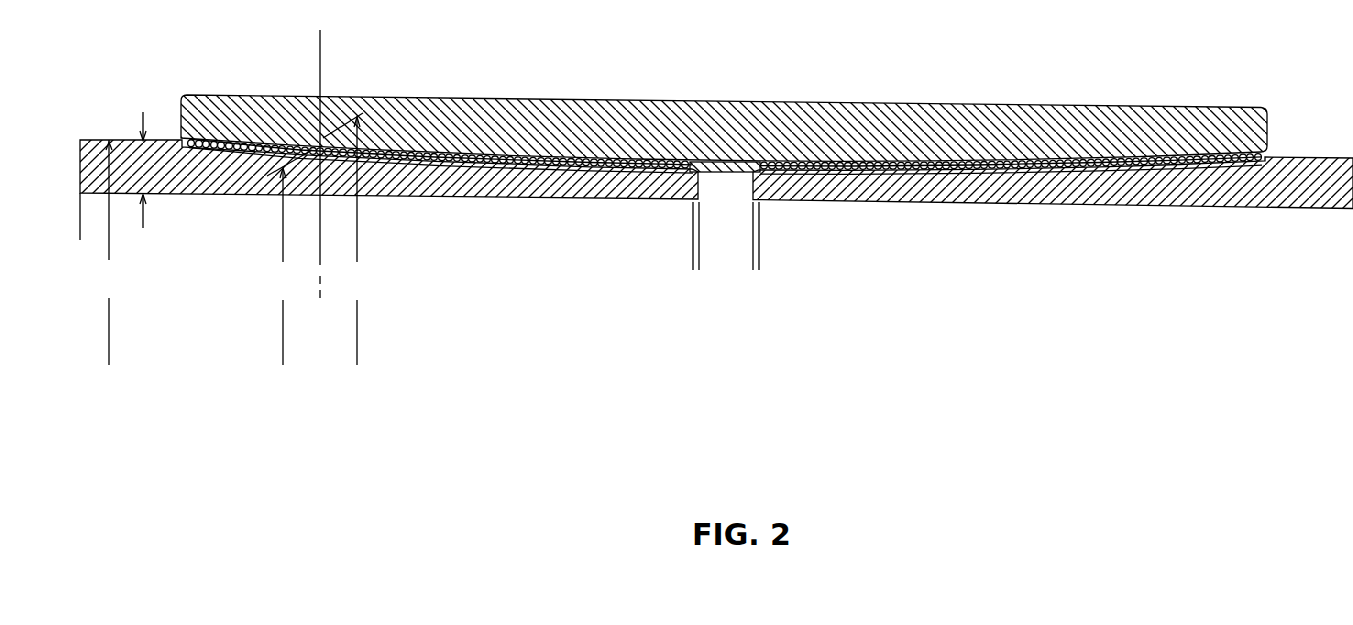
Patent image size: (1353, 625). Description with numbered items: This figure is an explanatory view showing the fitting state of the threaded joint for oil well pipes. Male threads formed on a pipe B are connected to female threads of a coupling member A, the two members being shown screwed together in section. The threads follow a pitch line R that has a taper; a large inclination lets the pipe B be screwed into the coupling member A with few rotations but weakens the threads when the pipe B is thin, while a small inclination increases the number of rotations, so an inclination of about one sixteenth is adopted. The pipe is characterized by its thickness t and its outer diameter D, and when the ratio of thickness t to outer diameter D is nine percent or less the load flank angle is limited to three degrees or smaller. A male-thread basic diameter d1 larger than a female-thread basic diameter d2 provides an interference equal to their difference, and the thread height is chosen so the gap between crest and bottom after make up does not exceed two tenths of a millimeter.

The coupling member A is at (724, 88).
The pipe B is at (716, 225).
The pitch line R is at (725, 214).
The pipe outer diameter D is at (99, 252).
The male-thread basic diameter d1 is at (289, 257).
The female-thread basic diameter d2 is at (352, 239).
The pipe thickness t is at (151, 171).